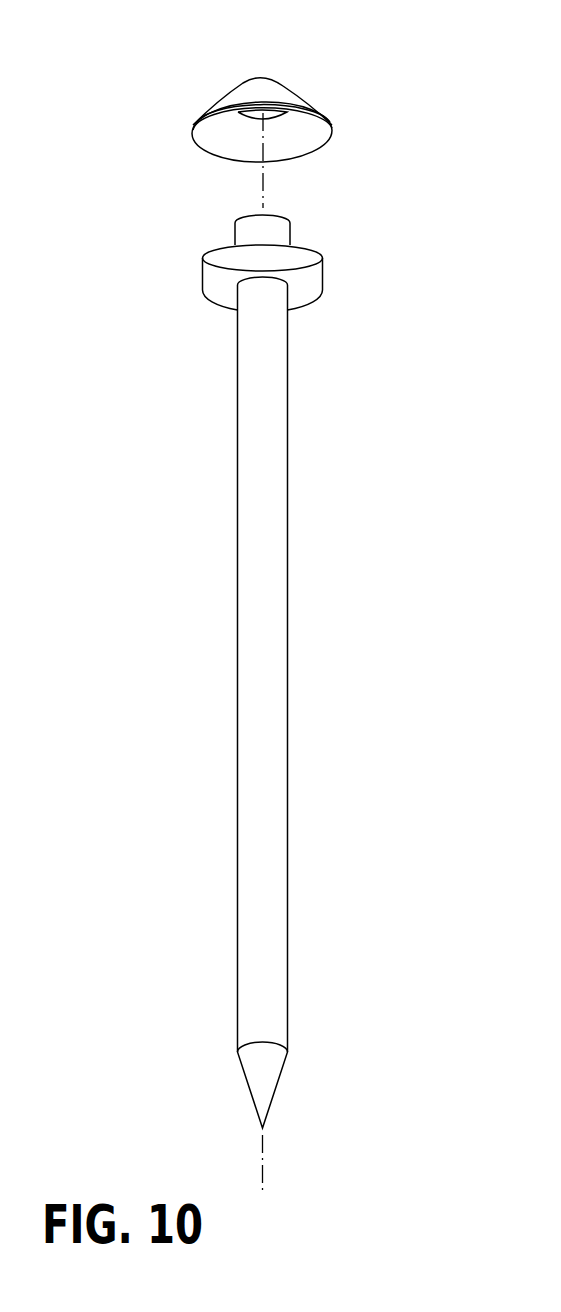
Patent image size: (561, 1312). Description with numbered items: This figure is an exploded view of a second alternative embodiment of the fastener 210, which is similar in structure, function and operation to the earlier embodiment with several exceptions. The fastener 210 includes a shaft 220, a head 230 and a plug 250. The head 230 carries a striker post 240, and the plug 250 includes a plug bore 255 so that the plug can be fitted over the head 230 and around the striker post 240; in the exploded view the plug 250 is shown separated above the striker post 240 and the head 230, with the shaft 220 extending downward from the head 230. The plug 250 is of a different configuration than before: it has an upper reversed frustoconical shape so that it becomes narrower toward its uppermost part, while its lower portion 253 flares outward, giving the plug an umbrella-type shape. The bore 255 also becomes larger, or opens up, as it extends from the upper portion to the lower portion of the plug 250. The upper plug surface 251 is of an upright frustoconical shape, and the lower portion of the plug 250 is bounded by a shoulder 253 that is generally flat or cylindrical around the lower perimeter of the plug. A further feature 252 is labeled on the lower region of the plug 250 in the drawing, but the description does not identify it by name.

The fastener 210 is at (266, 671).
The shaft 220 is at (250, 600).
The head 230 is at (210, 268).
The striker post 240 is at (275, 233).
The plug 250 is at (270, 87).
The upper plug surface 251 is at (295, 95).
The rim 252 is at (316, 140).
The lower portion 253 is at (327, 120).
The plug bore 255 is at (270, 115).